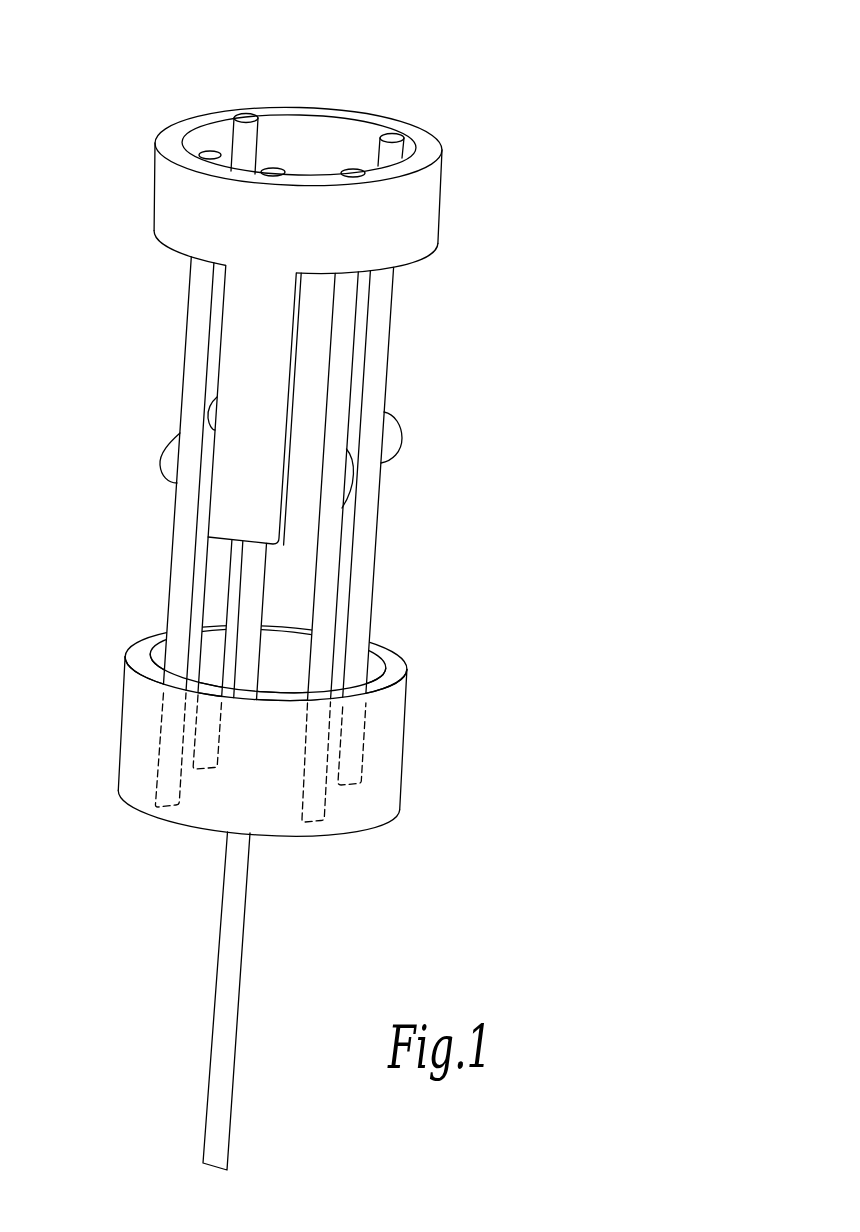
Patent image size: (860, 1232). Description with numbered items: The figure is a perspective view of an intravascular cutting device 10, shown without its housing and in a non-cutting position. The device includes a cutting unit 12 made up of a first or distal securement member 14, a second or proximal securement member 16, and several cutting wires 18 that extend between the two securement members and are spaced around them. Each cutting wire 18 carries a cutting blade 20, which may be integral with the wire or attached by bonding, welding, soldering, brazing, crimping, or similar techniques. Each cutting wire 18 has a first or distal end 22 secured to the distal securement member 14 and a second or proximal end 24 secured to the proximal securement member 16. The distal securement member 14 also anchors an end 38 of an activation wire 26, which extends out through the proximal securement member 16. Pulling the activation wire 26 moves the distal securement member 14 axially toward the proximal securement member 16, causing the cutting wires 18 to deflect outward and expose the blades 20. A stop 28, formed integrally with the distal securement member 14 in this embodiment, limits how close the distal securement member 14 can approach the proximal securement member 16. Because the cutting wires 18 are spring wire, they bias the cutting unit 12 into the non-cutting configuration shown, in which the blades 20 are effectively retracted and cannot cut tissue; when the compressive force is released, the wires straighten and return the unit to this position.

The intravascular cutting device 10 is at (634, 140).
The cutting unit 12 is at (475, 350).
The first securement member 14 is at (413, 217).
The second securement member 16 is at (387, 733).
The cutting wire 18 is at (367, 550).
The cutting blade 20 is at (402, 438).
The first end 22 is at (210, 152).
The second end 24 is at (158, 808).
The activation wire 26 is at (225, 958).
The stop 28 is at (255, 337).
The end of activation wire 38 is at (275, 170).